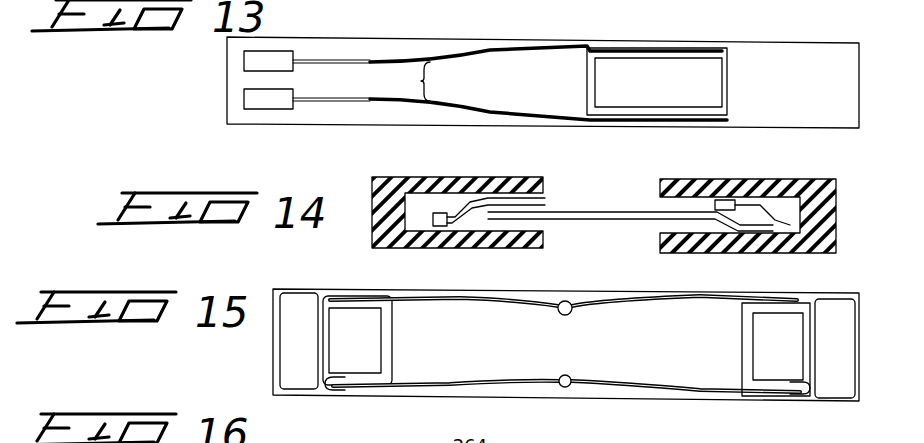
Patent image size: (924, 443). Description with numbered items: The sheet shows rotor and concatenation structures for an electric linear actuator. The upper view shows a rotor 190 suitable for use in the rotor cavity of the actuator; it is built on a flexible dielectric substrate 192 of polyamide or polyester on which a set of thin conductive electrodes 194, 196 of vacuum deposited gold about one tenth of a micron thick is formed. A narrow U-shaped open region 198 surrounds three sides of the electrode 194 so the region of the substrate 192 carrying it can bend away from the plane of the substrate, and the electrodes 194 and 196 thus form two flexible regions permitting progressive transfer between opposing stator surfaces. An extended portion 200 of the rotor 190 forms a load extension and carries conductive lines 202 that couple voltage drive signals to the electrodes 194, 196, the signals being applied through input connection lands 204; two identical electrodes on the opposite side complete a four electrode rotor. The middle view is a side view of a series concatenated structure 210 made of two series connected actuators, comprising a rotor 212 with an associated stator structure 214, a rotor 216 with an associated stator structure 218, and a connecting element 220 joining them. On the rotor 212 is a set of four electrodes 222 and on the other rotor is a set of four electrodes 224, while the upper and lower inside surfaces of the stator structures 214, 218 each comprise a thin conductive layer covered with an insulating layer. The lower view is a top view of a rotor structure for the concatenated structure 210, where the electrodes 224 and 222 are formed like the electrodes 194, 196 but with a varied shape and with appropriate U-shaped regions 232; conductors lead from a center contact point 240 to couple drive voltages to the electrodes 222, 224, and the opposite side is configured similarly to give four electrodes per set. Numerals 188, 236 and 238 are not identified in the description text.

In FIG. 13, the connector housing 188 is at (456, 36).
In FIG. 13, the rotor 190 is at (218, 55).
In FIG. 13, the flexible dielectric substrate 192 is at (532, 108).
In FIG. 14, the flexible dielectric substrate 192 is at (501, 184).
In FIG. 13, the electrode 194 is at (663, 72).
In FIG. 13, the electrode 196 is at (808, 62).
In FIG. 13, the U-shaped open region 198 is at (588, 86).
In FIG. 13, the extended portion 200 is at (316, 124).
In FIG. 13, the conductive lines 202 is at (447, 81).
In FIG. 13, the input connection lands 204 is at (244, 56).
In FIG. 14, the series concatenated structure 210 is at (606, 193).
In FIG. 14, the rotor 212 is at (735, 196).
In FIG. 15, the rotor 212 is at (815, 400).
In FIG. 14, the stator structure 214 is at (775, 178).
In FIG. 14, the rotor 216 is at (410, 212).
In FIG. 15, the rotor 216 is at (322, 396).
In FIG. 14, the stator structure 218 is at (450, 185).
In FIG. 14, the connecting element 220 is at (588, 220).
In FIG. 15, the connecting element 220 is at (582, 398).
In FIG. 14, the electrodes 222 is at (730, 248).
In FIG. 15, the electrodes 222 is at (790, 323).
In FIG. 14, the electrodes 224 is at (445, 248).
In FIG. 15, the electrodes 224 is at (348, 318).
In FIG. 15, the U-shaped region 232 is at (388, 344).
In FIG. 15, the upper conductor 236 is at (463, 303).
In FIG. 15, the lower conductor 238 is at (438, 386).
In FIG. 15, the center contact point 240 is at (572, 378).